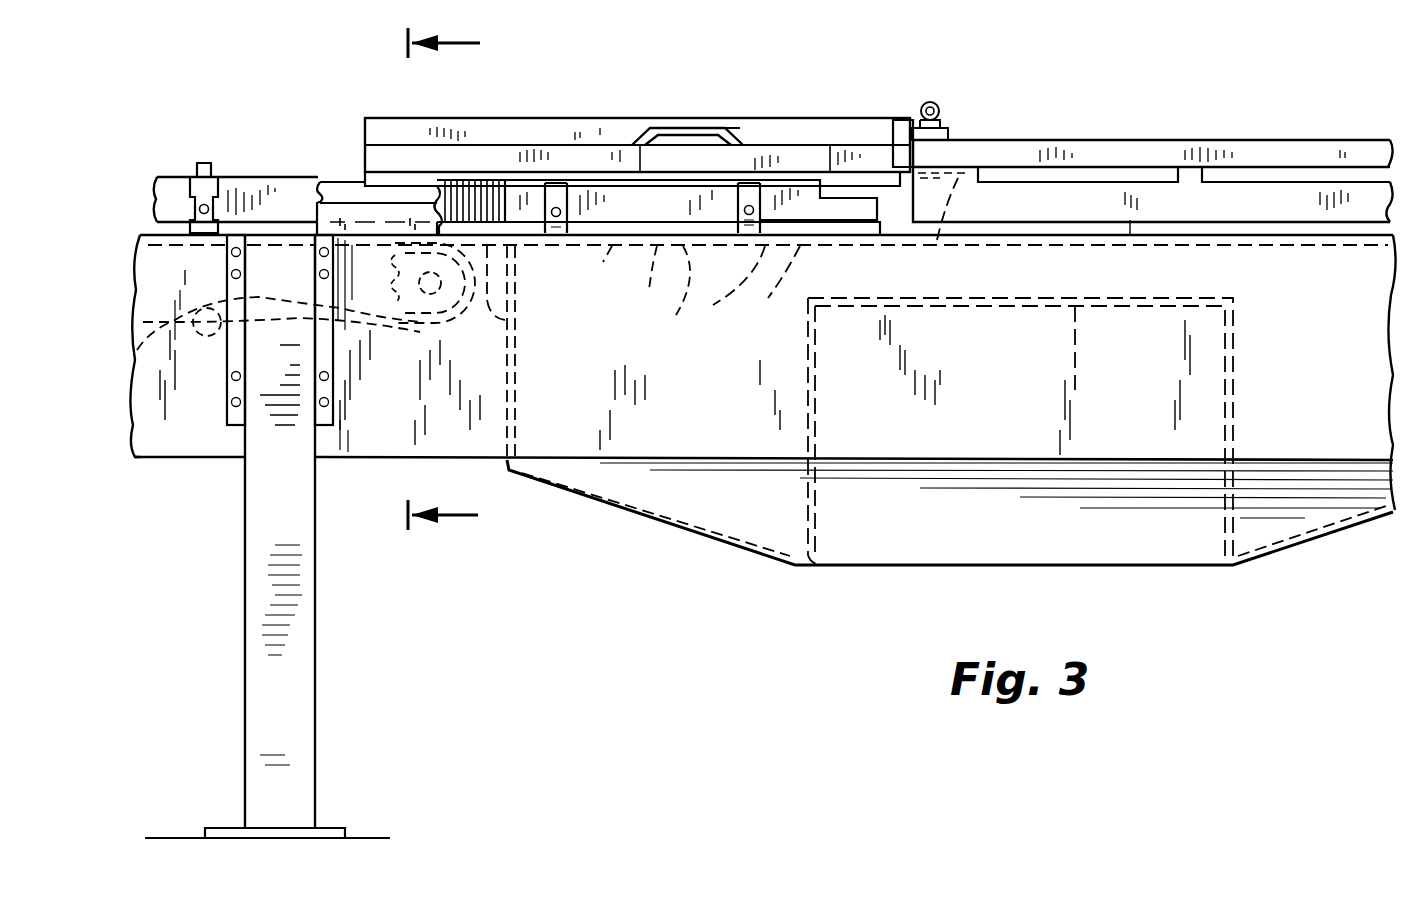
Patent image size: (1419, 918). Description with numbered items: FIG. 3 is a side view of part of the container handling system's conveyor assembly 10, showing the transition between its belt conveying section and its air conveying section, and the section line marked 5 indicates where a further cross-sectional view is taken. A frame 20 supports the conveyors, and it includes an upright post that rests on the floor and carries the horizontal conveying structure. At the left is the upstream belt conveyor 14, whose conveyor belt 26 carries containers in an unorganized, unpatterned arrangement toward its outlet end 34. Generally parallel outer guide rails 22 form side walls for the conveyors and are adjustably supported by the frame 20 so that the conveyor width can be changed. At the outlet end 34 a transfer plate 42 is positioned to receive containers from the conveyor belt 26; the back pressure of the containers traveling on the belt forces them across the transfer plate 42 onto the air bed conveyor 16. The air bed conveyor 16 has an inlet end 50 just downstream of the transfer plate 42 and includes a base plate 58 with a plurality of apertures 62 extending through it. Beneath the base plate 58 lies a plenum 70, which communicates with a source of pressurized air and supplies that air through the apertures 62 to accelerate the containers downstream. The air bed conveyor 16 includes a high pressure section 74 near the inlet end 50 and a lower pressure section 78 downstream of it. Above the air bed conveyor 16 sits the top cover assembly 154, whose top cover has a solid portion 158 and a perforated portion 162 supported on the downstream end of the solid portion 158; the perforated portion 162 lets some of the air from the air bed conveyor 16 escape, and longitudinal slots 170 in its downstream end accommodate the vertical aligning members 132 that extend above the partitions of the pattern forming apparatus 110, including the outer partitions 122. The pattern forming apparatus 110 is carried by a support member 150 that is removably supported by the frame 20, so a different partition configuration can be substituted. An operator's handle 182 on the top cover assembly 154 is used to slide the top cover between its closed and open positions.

The conveyor assembly 10 is at (343, 70).
The upstream belt conveyor 14 is at (226, 108).
The air bed conveyor 16 is at (852, 90).
The frame 20 is at (283, 633).
The outer guide rails 22 is at (240, 190).
The conveyor belt 26 is at (137, 350).
The outlet end 34 is at (348, 170).
The transfer plate 42 is at (545, 260).
The inlet end 50 is at (658, 275).
The base plate 58 is at (756, 287).
The apertures 62 is at (649, 290).
The plenum 70 is at (655, 432).
The high pressure section 74 is at (655, 277).
The lower pressure section 78 is at (893, 210).
The pattern forming apparatus 110 is at (1083, 128).
The outer partitions 122 is at (1268, 214).
The aligning members 132 is at (980, 154).
The support member 150 is at (975, 125).
The top cover assembly 154 is at (682, 98).
The solid portion 158 is at (655, 172).
The perforated portion 162 is at (833, 170).
The longitudinal slots 170 is at (937, 240).
The operator's handle 182 is at (727, 120).
The section line 5- 5 is at (462, 281).